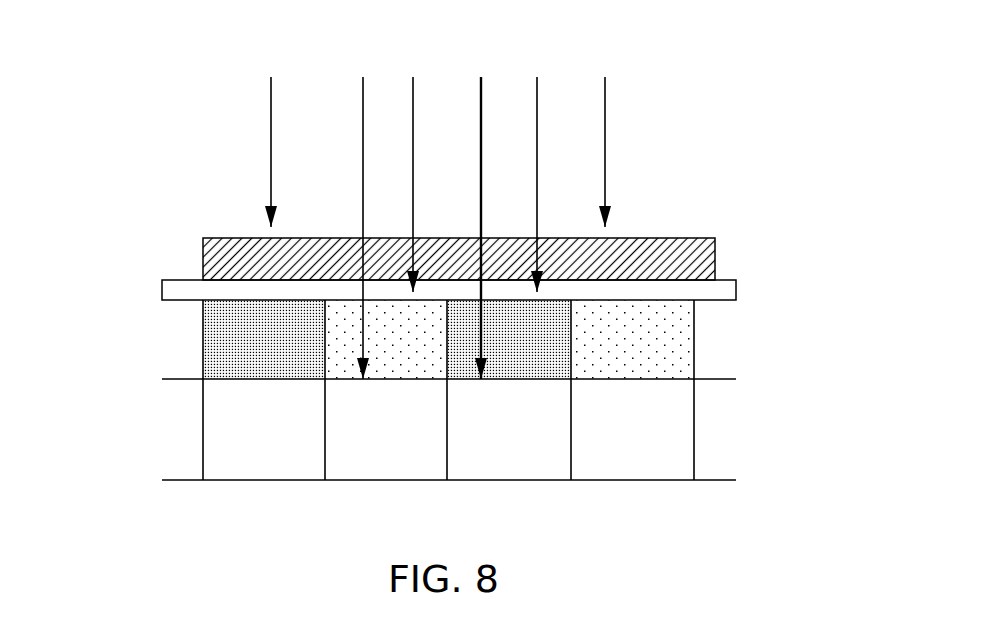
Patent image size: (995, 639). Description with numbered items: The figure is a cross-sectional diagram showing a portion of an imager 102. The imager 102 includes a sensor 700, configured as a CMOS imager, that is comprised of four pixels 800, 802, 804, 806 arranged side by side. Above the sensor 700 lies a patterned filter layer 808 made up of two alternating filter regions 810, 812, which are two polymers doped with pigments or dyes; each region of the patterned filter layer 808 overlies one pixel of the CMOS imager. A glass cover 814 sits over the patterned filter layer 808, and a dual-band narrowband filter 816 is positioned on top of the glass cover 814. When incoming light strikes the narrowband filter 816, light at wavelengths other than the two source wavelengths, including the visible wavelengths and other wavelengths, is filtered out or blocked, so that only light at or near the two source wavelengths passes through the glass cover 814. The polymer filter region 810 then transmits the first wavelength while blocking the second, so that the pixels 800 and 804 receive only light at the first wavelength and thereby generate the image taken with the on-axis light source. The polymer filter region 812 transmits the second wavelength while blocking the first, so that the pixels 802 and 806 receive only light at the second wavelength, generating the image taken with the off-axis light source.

The imager 102 is at (452, 256).
The sensor 700 is at (376, 390).
The pixel 800 is at (264, 429).
The pixel 802 is at (386, 429).
The pixel 804 is at (509, 429).
The pixel 806 is at (632, 429).
The patterned filter layer 808 is at (452, 339).
The filter region 810 is at (534, 360).
The filter region 812 is at (668, 320).
The glass cover 814 is at (162, 278).
The dual-band narrowband filter 816 is at (209, 237).